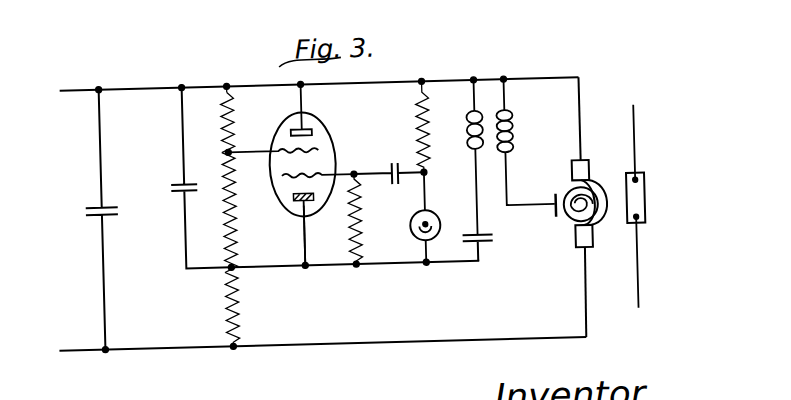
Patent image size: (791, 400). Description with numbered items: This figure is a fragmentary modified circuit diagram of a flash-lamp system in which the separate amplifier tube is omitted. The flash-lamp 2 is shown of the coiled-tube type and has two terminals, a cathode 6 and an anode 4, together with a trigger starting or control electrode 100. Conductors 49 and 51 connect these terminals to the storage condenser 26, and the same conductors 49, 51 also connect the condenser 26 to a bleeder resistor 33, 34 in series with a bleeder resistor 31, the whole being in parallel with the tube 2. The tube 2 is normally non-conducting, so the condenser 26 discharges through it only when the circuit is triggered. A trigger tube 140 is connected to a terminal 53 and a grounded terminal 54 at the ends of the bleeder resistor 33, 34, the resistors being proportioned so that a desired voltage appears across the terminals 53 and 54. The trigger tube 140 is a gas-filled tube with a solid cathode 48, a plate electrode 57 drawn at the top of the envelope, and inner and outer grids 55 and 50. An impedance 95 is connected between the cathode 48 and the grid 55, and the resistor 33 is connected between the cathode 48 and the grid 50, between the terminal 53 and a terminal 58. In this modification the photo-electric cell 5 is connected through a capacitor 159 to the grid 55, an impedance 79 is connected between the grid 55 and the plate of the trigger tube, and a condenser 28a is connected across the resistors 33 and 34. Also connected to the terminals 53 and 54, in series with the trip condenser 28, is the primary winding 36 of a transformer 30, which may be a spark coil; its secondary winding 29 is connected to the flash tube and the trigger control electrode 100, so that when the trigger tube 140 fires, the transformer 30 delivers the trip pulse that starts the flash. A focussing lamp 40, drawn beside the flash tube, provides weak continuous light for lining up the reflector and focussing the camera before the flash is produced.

The conductor 51 is at (131, 83).
The conductor 49 is at (146, 348).
The condenser 26 is at (107, 212).
The condenser 28a is at (185, 189).
The grounded terminal 54 is at (228, 86).
The bleeder resistor 34 is at (236, 125).
The bleeder resistor 33 is at (235, 201).
The bleeder resistor 31 is at (238, 300).
The terminal 53 is at (233, 267).
The trigger tube 140 is at (321, 126).
The plate 57 is at (292, 129).
The terminal 58 is at (234, 153).
The outer grid 50 is at (319, 148).
The inner grid 55 is at (292, 197).
The solid cathode 48 is at (310, 198).
The impedance 95 is at (357, 236).
The capacitor 159 is at (384, 172).
The impedance 79 is at (430, 114).
The photo-electric cell 5 is at (442, 232).
The transformer 30 is at (496, 155).
The primary winding 36 is at (469, 131).
The secondary winding 29 is at (517, 133).
The trip condenser 28 is at (487, 248).
The trigger control electrode 100 is at (549, 223).
The flash-lamp 2 is at (603, 176).
The cathode 6 is at (584, 167).
The anode 4 is at (586, 252).
The focussing lamp 40 is at (640, 211).